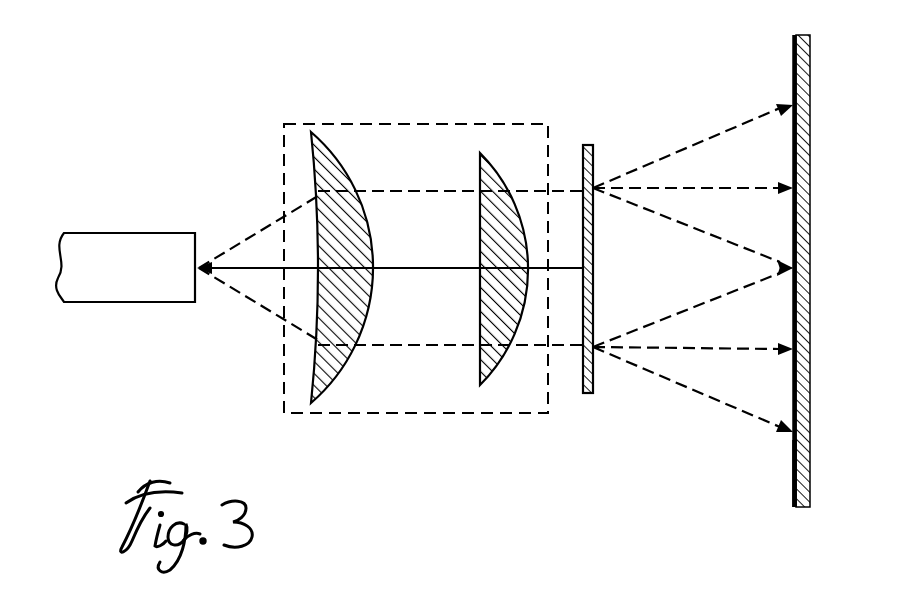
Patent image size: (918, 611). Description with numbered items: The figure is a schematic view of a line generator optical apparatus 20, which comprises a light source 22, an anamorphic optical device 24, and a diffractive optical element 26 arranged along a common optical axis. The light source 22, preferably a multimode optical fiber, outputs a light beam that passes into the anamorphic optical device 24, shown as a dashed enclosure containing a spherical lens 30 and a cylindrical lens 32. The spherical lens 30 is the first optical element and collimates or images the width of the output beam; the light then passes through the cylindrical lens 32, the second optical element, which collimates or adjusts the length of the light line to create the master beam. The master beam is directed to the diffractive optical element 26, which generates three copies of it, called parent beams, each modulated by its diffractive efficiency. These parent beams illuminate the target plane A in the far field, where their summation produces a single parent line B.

The line generator optical apparatus 20 is at (200, 344).
The light source 22 is at (128, 257).
The anamorphic optical device 24 is at (378, 413).
The diffractive optical element 26 is at (593, 160).
The spherical lens 30 is at (335, 198).
The cylindrical lens 32 is at (518, 173).
The target plane A is at (793, 458).
The parent line B is at (793, 143).